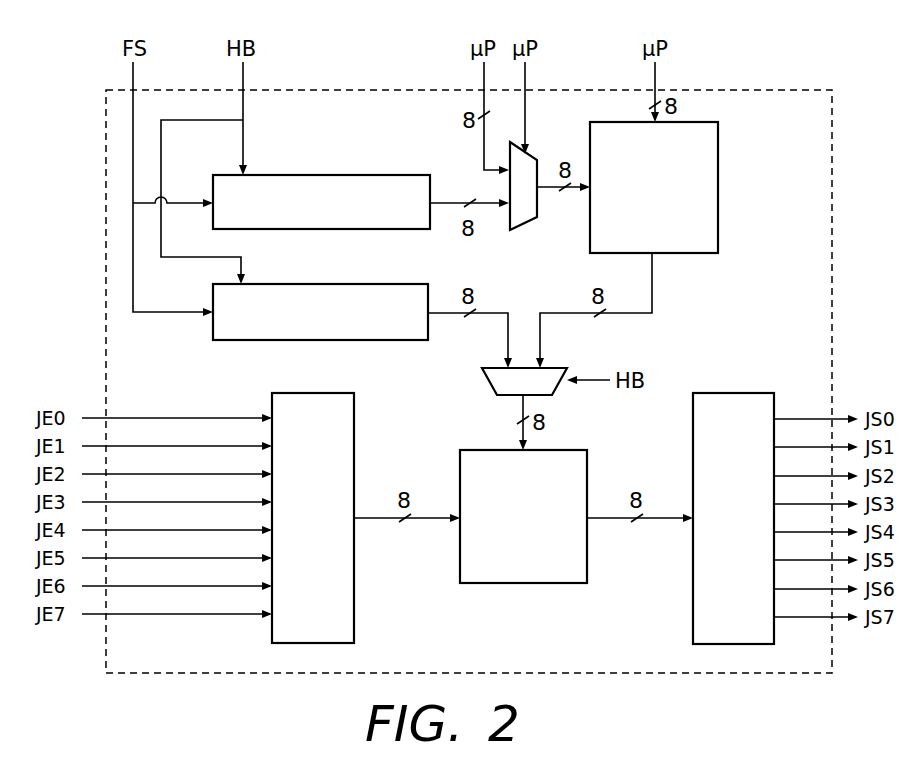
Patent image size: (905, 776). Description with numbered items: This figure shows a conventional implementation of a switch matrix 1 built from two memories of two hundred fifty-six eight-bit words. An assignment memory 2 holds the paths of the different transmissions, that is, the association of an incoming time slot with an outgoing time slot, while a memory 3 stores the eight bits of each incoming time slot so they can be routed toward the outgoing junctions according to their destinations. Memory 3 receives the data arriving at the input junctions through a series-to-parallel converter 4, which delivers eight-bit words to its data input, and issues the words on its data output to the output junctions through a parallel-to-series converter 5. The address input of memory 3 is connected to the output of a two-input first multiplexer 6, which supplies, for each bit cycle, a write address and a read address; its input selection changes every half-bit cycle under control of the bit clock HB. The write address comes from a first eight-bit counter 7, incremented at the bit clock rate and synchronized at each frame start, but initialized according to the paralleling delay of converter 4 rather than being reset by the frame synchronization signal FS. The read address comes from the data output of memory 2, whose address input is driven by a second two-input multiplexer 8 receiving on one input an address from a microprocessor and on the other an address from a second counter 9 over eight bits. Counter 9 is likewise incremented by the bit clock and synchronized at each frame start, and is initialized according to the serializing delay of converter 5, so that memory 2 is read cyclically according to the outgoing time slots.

The matrix 1 is at (832, 155).
The assignment memory 2 is at (718, 185).
The memory 3 is at (587, 465).
The series-to-parallel converter 4 is at (354, 420).
The parallel-to-series converter 5 is at (735, 393).
The first multiplexer 6 is at (482, 376).
The first 8-bit counter 7 is at (335, 284).
The second two-input multiplexer 8 is at (520, 230).
The second counter 9 is at (335, 175).